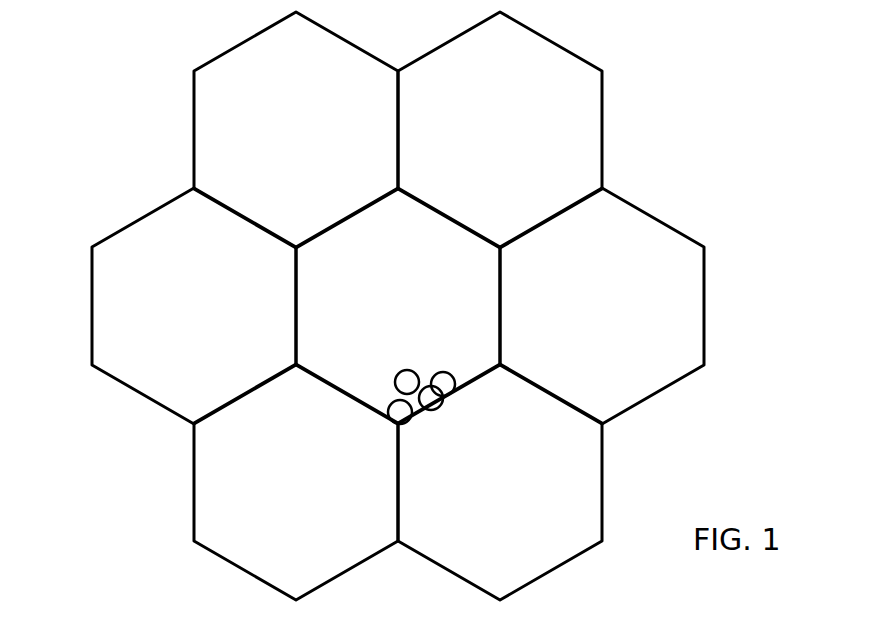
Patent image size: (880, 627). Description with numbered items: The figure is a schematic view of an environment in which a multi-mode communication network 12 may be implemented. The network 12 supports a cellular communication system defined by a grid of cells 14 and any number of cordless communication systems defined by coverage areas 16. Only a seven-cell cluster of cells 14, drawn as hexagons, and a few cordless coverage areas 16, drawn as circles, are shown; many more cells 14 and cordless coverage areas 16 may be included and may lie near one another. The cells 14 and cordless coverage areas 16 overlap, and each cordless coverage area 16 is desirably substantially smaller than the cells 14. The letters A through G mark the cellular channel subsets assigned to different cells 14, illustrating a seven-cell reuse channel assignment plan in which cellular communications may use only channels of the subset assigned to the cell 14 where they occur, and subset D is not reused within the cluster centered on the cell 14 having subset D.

The multi-mode communication network 12 is at (160, 596).
The cell 14 is at (194, 71).
The cordless coverage area 16 is at (400, 370).